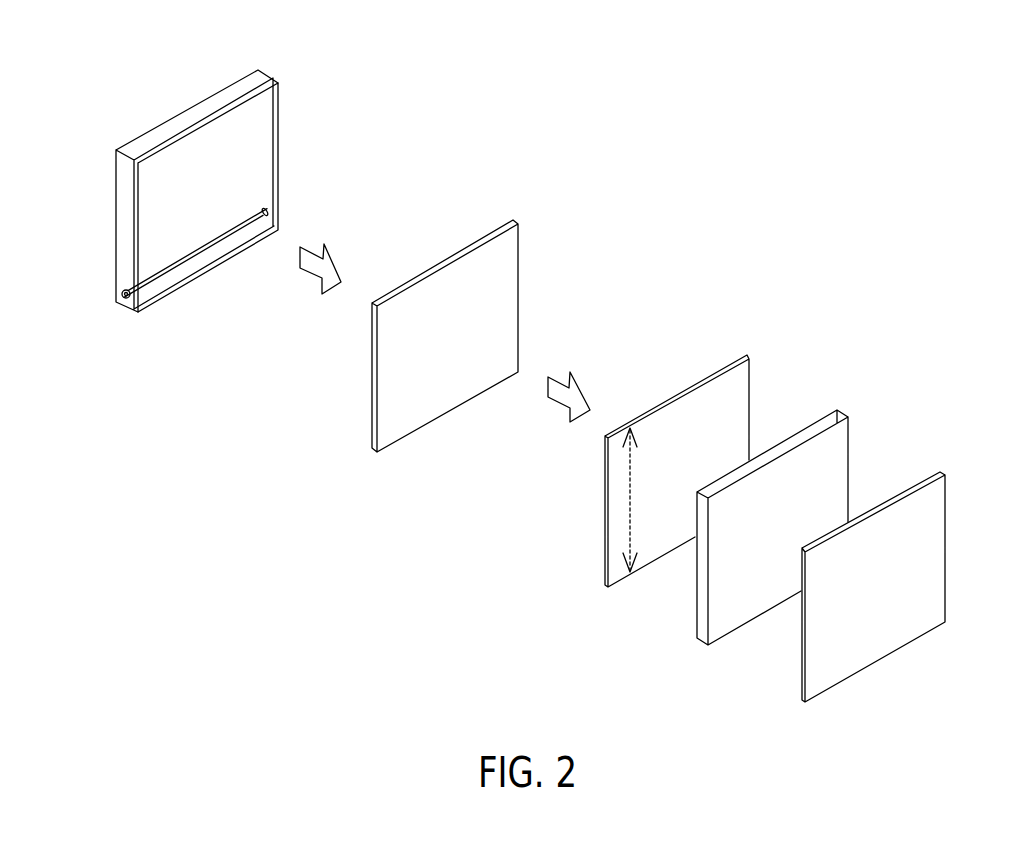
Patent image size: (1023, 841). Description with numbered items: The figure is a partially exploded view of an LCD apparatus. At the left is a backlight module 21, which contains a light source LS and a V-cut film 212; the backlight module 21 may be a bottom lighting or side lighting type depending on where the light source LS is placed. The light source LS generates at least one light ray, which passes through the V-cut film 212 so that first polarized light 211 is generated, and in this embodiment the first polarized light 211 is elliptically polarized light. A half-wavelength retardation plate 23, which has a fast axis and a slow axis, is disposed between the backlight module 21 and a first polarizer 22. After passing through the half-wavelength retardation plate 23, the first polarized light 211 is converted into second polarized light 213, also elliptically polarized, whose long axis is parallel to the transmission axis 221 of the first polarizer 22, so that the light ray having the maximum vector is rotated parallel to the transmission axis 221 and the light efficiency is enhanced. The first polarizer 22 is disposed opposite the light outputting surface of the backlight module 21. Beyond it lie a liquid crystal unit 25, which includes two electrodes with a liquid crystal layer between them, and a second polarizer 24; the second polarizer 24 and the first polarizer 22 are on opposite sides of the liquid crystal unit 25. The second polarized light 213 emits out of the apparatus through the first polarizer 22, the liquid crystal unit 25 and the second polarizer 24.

The backlight module 21 is at (205, 177).
The first polarized light 211 is at (324, 246).
The V-cut film 212 is at (280, 82).
The light source LS is at (118, 295).
The half-wavelength retardation plate 23 is at (517, 222).
The second polarized light 213 is at (571, 378).
The first polarizer 22 is at (673, 450).
The transmission axis 221 is at (629, 503).
The liquid crystal unit 25 is at (840, 413).
The second polarizer 24 is at (940, 473).